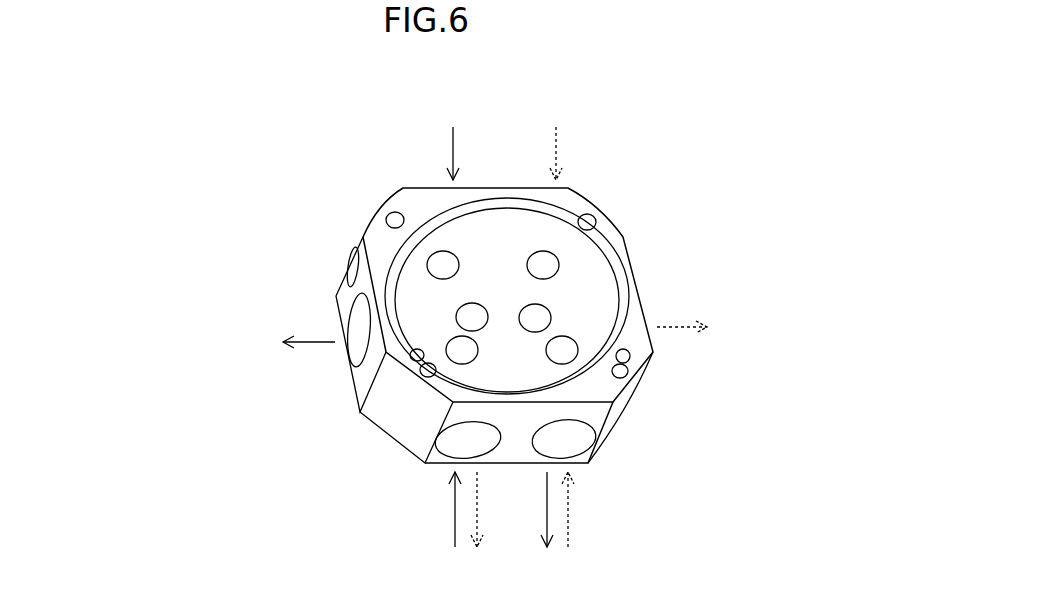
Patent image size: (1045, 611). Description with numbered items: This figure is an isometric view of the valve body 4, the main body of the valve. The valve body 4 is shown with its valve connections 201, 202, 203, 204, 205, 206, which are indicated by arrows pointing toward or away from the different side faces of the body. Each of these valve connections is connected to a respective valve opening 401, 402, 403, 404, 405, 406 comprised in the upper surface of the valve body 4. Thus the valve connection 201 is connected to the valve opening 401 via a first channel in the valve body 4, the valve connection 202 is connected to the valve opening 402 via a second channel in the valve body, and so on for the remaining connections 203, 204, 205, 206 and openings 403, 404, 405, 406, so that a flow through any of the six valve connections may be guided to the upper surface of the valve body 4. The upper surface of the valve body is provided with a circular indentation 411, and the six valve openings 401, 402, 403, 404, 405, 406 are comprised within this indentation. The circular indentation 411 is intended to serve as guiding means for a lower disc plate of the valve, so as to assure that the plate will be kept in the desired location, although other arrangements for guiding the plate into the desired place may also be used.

The valve body 4 is at (653, 128).
The valve connection 201 is at (574, 152).
The valve connection 202 is at (682, 313).
The valve connection 203 is at (435, 152).
The valve connection 204 is at (309, 326).
The valve connection 205 is at (580, 509).
The valve connection 206 is at (444, 509).
The valve opening 401 is at (540, 265).
The valve opening 402 is at (540, 317).
The valve opening 403 is at (443, 265).
The valve opening 404 is at (470, 317).
The valve opening 405 is at (562, 352).
The valve opening 406 is at (462, 352).
The circular indentation 411 is at (560, 380).